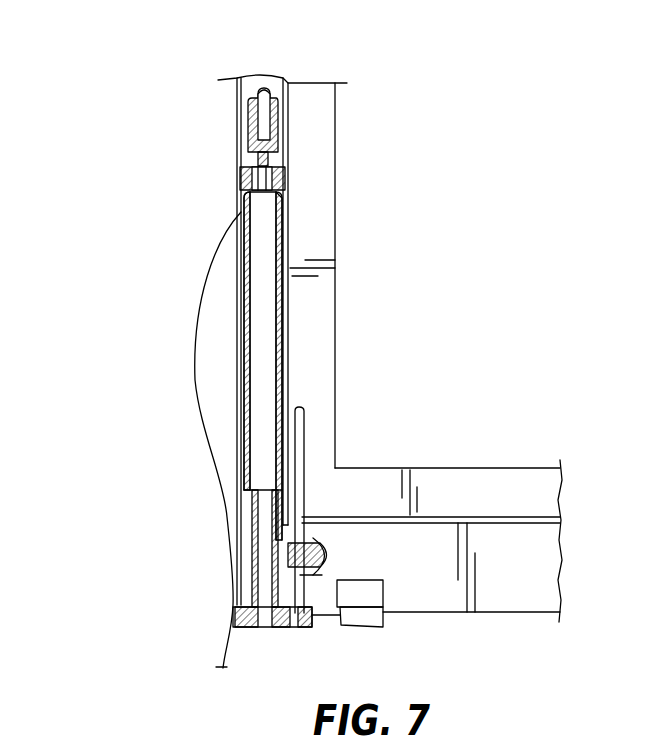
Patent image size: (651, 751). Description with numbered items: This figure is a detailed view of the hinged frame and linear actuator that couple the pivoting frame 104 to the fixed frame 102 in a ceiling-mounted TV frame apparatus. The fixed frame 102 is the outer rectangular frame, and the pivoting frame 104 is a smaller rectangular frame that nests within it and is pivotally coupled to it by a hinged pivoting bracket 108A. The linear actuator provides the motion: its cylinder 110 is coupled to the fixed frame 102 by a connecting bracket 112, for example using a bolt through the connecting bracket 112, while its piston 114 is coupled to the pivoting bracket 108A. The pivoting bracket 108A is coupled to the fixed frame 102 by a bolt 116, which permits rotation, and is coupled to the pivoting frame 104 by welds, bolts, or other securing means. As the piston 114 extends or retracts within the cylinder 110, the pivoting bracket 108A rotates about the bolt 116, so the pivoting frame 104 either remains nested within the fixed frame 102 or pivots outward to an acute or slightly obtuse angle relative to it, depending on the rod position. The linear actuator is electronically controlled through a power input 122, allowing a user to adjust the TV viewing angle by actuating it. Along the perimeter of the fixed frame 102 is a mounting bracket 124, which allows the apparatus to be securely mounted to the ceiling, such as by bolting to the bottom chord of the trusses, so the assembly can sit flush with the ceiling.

The fixed frame 102 is at (505, 580).
The pivoting frame 104 is at (462, 489).
The pivoting bracket 108A is at (297, 440).
The cylinder 110 is at (262, 260).
The connecting bracket 112 is at (252, 132).
The piston 114 is at (267, 552).
The bolt 116 is at (322, 556).
The power input 122 is at (190, 373).
The mounting bracket 124 is at (383, 618).